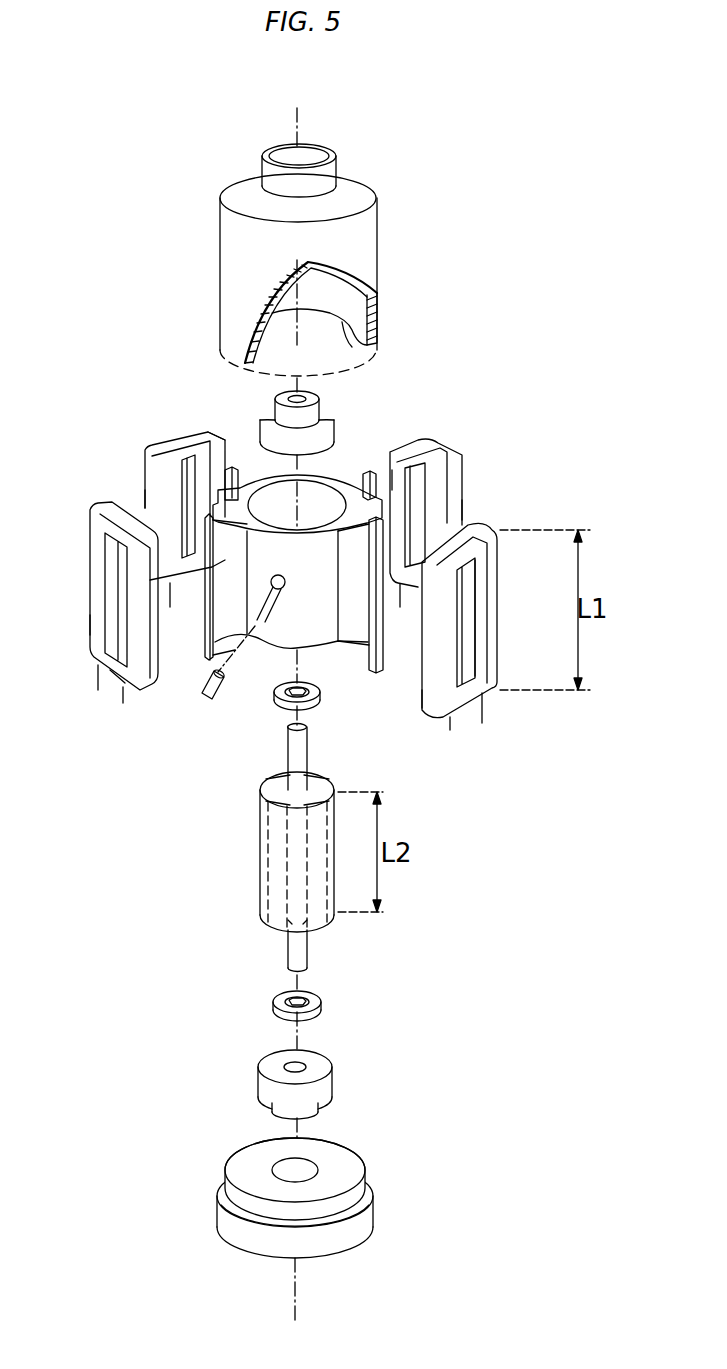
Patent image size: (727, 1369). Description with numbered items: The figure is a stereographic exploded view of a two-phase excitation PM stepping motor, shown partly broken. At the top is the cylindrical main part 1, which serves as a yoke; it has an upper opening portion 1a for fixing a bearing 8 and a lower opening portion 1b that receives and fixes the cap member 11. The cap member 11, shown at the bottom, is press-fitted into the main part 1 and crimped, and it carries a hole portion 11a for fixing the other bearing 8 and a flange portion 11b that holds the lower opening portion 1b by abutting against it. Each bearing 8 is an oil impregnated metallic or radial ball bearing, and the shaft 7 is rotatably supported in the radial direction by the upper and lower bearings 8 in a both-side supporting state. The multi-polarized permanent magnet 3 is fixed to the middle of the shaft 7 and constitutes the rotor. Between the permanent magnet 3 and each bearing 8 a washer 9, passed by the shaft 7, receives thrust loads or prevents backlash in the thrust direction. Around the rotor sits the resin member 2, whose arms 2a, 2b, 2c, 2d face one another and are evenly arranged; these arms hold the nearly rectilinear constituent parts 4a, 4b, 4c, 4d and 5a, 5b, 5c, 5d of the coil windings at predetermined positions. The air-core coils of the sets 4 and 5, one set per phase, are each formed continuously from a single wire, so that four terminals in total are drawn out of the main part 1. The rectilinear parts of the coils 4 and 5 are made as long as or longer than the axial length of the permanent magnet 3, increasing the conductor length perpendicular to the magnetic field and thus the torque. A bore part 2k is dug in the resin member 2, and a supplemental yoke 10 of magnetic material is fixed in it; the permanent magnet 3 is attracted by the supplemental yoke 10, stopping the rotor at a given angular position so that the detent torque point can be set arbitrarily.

The main part 1 is at (375, 242).
The upper opening portion 1a is at (325, 160).
The lower opening portion 1b is at (358, 335).
The resin member 2 is at (332, 476).
The arm 2a is at (372, 650).
The arm 2b is at (372, 472).
The arm 2c is at (243, 466).
The arm 2d is at (210, 650).
The bore part 2k is at (277, 633).
The multi-polarized permanent magnet 3 is at (265, 858).
The air-core coil set 4 is at (148, 445).
The rectilinear constituent part 4a is at (492, 650).
The rectilinear constituent part 4b is at (435, 674).
The rectilinear constituent part 4c is at (145, 503).
The rectilinear constituent part 4d is at (223, 437).
The air-core coil set 5 is at (90, 586).
The rectilinear constituent part 5a is at (400, 462).
The rectilinear constituent part 5b is at (465, 504).
The rectilinear constituent part 5c is at (134, 662).
The rectilinear constituent part 5d is at (90, 627).
The shaft 7 is at (300, 768).
The bearing 8 is at (332, 425).
The washer 9 is at (312, 705).
The supplemental yoke 10 is at (212, 702).
The cap member 11 is at (204, 1220).
The hole portion 11a is at (315, 1165).
The flange portion 11b is at (362, 1218).